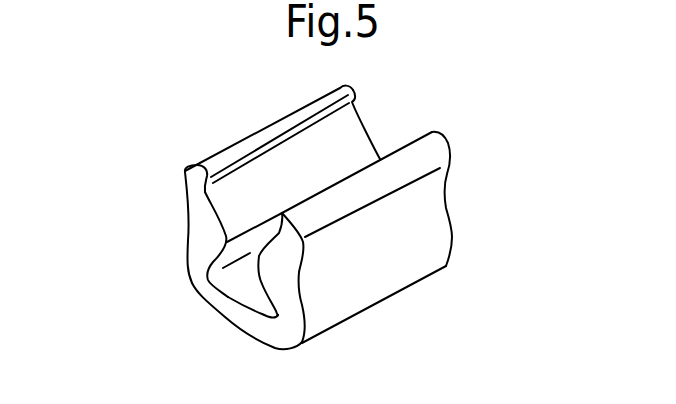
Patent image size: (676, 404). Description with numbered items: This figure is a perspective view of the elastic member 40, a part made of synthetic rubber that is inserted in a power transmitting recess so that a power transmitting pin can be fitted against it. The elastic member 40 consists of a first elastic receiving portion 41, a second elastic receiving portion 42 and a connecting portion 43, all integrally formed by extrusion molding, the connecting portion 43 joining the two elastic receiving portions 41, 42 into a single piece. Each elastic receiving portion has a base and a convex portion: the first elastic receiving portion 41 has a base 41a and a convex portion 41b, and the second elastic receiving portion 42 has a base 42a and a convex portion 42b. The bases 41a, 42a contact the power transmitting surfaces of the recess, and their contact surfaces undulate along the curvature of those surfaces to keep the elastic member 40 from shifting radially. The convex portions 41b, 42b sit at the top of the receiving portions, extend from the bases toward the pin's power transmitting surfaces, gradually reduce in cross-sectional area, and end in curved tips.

The elastic member 40 is at (450, 197).
The first elastic receiving portion 41 is at (183, 237).
The base 41a is at (183, 184).
The convex portion 41b is at (220, 237).
The second elastic receiving portion 42 is at (325, 326).
The base 42a is at (303, 229).
The convex portion 42b is at (283, 275).
The connecting portion 43 is at (232, 312).